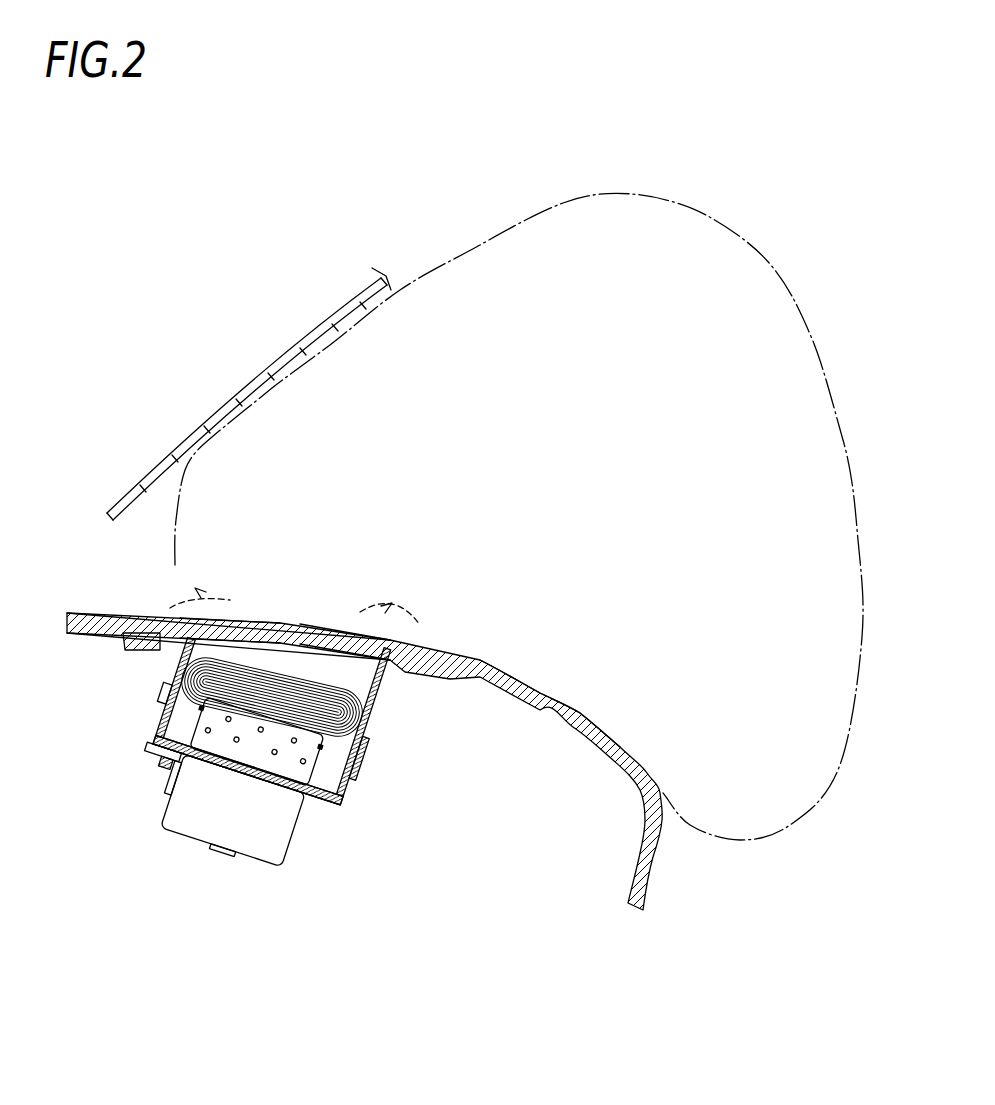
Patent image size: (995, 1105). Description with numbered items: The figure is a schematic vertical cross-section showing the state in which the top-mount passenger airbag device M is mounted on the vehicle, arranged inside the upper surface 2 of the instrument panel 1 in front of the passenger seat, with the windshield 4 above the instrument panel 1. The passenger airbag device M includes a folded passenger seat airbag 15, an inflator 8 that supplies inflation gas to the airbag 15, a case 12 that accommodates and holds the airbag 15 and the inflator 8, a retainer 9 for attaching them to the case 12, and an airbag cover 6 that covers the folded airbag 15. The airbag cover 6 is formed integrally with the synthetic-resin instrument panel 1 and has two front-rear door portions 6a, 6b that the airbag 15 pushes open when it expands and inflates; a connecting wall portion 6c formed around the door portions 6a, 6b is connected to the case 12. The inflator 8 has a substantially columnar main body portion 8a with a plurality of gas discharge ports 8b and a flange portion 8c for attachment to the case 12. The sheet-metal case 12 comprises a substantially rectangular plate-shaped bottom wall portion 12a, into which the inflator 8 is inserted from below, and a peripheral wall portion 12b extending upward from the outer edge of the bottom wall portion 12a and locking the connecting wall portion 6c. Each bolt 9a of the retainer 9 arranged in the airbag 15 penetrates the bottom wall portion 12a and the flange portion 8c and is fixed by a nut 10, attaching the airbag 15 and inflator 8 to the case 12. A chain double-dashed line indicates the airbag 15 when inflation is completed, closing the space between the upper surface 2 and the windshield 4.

The instrument panel 1 is at (663, 877).
The upper surface 2 is at (553, 693).
The windshield 4 is at (250, 385).
The airbag cover 6 is at (385, 737).
The door portion 6a is at (185, 593).
The door portion 6b is at (348, 627).
The connecting wall portion 6c is at (153, 712).
The inflator 8 is at (252, 864).
The main body portion 8a is at (200, 833).
The gas discharge ports 8b is at (300, 767).
The flange portion 8c is at (308, 793).
The retainer 9 is at (160, 743).
The bolt 9a is at (170, 787).
The nut 10 is at (170, 767).
The case 12 is at (352, 805).
The bottom wall portion 12a is at (320, 797).
The peripheral wall portion 12b is at (350, 787).
The passenger seat airbag 15 is at (788, 246).
The passenger airbag device M is at (120, 910).